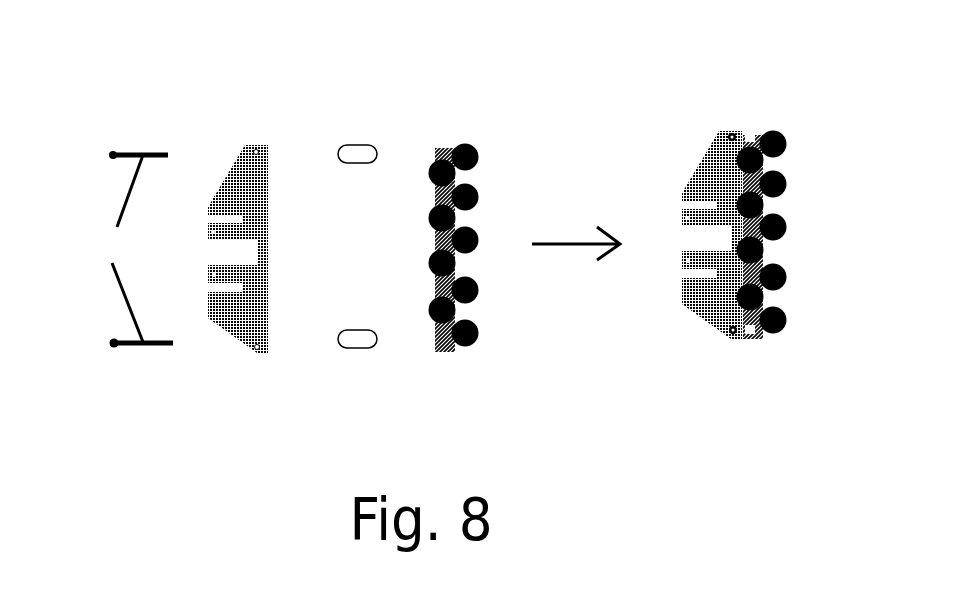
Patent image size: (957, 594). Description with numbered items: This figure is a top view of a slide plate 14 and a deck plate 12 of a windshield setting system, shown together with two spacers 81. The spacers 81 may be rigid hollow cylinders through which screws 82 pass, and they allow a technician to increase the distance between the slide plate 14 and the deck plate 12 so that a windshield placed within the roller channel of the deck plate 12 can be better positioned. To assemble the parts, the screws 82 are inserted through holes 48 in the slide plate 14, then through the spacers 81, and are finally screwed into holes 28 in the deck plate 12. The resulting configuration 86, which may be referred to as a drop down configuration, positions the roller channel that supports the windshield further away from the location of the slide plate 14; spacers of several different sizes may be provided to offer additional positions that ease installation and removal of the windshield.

The deck plate 12 is at (452, 146).
The slide plate 14 is at (235, 333).
The holes 28 is at (443, 148).
The holes 48 is at (257, 148).
The spacers 81 is at (352, 142).
The screws 82 is at (127, 249).
The drop down configuration 86 is at (730, 393).